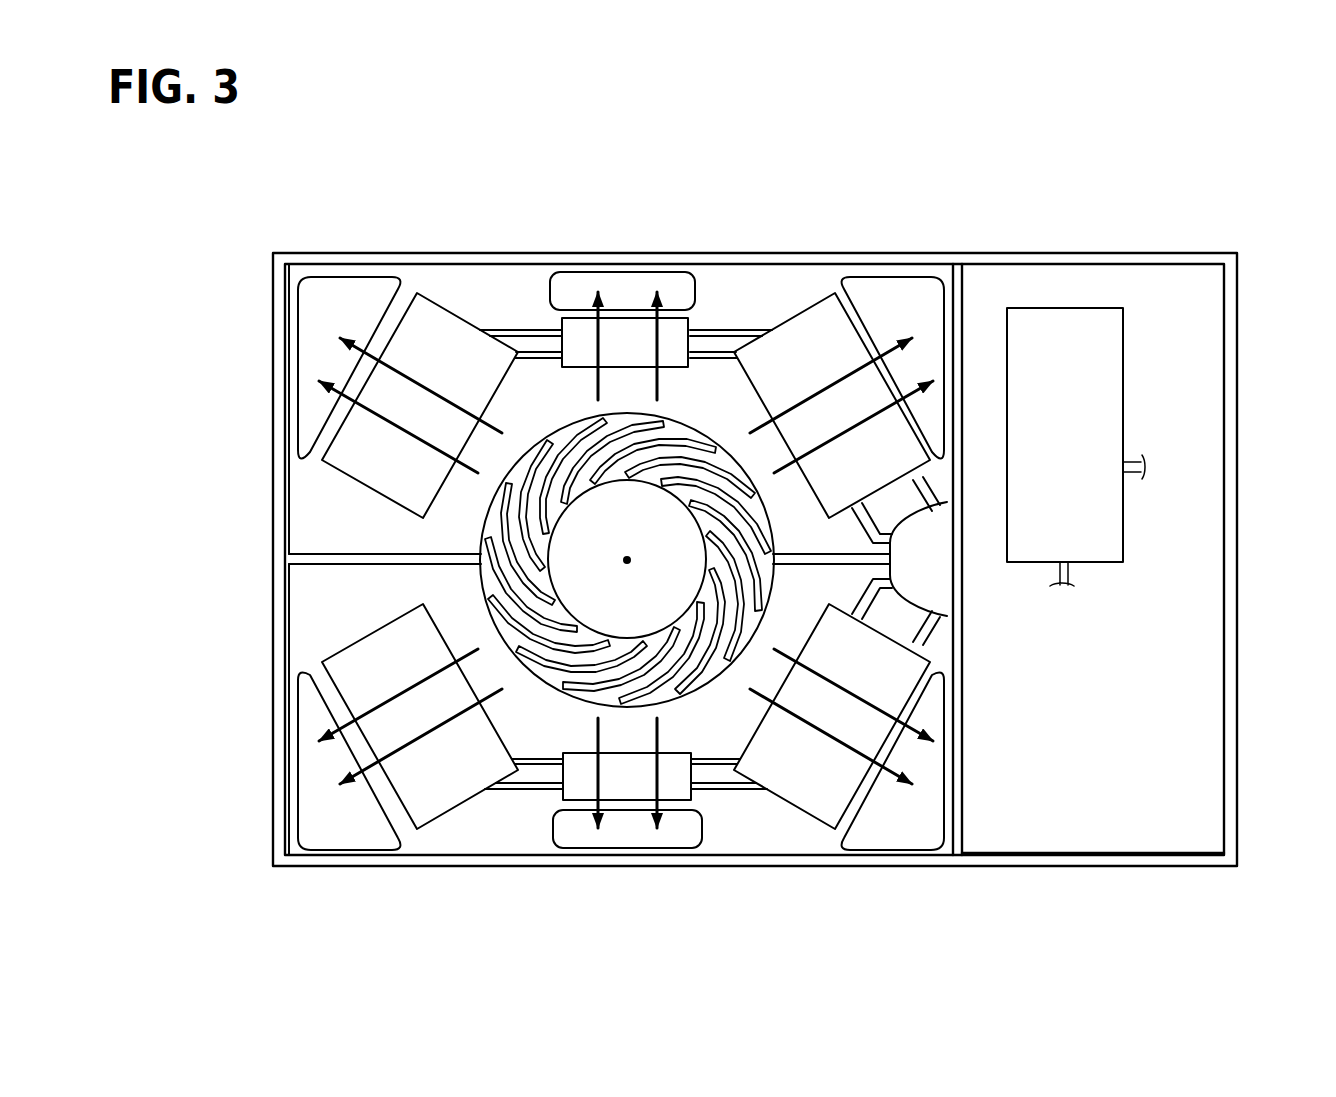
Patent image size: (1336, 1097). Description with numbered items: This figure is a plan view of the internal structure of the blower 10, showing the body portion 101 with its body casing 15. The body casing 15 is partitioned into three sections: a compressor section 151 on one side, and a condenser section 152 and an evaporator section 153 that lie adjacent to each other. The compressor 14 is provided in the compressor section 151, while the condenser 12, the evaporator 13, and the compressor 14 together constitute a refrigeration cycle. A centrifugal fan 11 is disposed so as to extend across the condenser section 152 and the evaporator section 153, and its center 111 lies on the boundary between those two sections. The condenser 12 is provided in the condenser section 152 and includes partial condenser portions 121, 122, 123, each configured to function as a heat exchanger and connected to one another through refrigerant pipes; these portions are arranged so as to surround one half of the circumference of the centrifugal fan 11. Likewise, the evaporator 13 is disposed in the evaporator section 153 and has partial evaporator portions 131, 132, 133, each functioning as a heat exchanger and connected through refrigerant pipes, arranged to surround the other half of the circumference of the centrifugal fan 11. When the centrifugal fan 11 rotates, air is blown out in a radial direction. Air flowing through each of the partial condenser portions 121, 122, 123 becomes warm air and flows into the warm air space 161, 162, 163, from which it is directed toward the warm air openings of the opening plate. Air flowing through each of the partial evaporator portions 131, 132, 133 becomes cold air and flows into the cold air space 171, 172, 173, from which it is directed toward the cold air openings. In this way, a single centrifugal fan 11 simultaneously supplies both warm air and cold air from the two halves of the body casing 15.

The air conditioner 10 is at (1146, 182).
The body portion 101 is at (1075, 252).
The centrifugal fan 11 is at (480, 578).
The center 111 is at (627, 560).
The condenser 12 is at (629, 773).
The partial condenser portion 121 is at (462, 787).
The partial condenser portion 122 is at (640, 797).
The partial condenser portion 123 is at (815, 748).
The evaporator 13 is at (629, 350).
The partial evaporator portion 131 is at (455, 330).
The partial evaporator portion 132 is at (636, 325).
The partial evaporator portion 133 is at (815, 375).
The compressor 14 is at (1108, 550).
The body casing 15 is at (1231, 317).
The compressor section 151 is at (1113, 840).
The condenser section 152 is at (307, 620).
The evaporator section 153 is at (303, 521).
The warm air space 161 is at (363, 845).
The warm air space 162 is at (700, 823).
The warm air space 163 is at (906, 843).
The cold air space 171 is at (335, 287).
The cold air space 172 is at (695, 291).
The cold air space 173 is at (912, 283).